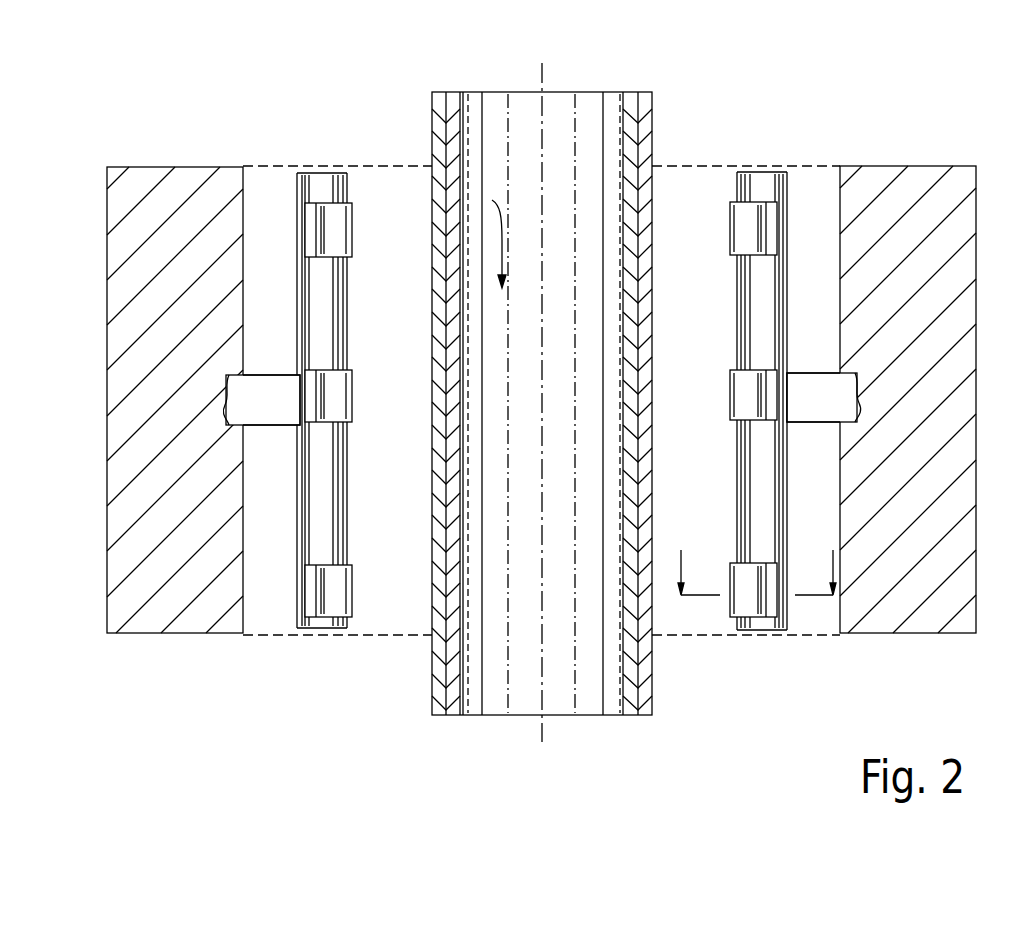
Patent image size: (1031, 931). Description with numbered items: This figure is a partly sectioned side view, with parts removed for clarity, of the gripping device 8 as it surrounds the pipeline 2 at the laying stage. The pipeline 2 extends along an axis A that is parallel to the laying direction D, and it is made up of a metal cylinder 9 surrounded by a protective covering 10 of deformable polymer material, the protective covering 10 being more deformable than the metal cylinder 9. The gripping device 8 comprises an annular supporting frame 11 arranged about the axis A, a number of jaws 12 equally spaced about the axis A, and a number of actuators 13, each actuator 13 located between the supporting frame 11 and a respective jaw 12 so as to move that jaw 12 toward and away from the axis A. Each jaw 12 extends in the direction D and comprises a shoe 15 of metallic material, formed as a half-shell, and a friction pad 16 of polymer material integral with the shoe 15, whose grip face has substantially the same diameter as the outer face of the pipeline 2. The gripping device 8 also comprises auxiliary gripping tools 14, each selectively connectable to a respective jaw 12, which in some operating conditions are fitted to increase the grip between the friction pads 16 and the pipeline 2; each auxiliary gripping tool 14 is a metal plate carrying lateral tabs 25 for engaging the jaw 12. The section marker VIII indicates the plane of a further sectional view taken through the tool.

The pipeline 2 is at (538, 386).
The gripping device 8 is at (933, 359).
The metal cylinder 9 is at (628, 133).
The protective covering 10 is at (437, 118).
The annular supporting frame 11 is at (918, 272).
The jaw 12 is at (541, 390).
The actuator 13 is at (268, 397).
The auxiliary gripping tool 14 is at (538, 401).
The shoe 15 is at (300, 302).
The friction pad 16 is at (340, 300).
The lateral tab 25 is at (318, 226).
The axis A is at (538, 82).
The laying direction D is at (493, 228).
The section line VIII is at (757, 572).